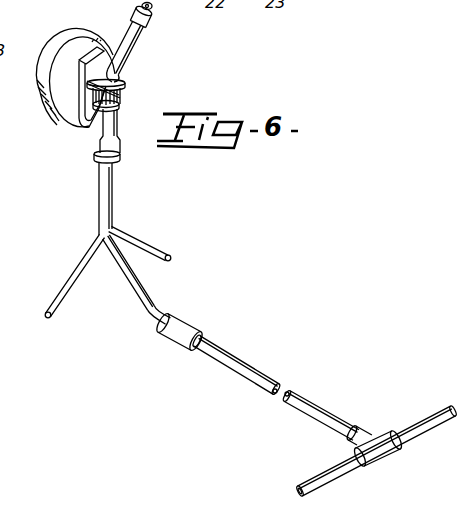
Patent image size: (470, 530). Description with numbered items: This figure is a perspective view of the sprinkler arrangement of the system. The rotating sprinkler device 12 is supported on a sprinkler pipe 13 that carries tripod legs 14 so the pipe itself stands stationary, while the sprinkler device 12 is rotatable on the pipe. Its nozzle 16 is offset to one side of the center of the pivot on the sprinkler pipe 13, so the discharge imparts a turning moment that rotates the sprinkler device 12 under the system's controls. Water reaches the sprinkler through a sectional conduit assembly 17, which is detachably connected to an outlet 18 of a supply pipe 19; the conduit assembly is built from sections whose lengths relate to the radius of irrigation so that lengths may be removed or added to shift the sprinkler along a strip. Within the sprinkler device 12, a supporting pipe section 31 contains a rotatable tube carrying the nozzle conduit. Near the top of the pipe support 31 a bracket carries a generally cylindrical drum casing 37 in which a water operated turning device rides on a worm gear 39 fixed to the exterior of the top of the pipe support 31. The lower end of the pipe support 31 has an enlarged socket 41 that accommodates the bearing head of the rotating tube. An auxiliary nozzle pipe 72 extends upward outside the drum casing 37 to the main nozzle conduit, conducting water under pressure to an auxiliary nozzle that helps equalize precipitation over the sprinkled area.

The rotating sprinkler device 12 is at (128, 77).
The sprinkler pipe 13 is at (137, 273).
The tripod legs 14 is at (141, 242).
The nozzle 16 is at (152, 11).
The sectional conduit assembly 17 is at (230, 351).
The outlet 18 is at (371, 458).
The supply pipe 19 is at (430, 430).
The supporting pipe section 31 is at (117, 121).
The drum casing 37 is at (70, 39).
The worm gear 39 is at (121, 98).
The enlarged socket 41 is at (120, 147).
The auxiliary nozzle pipe 72 is at (75, 107).